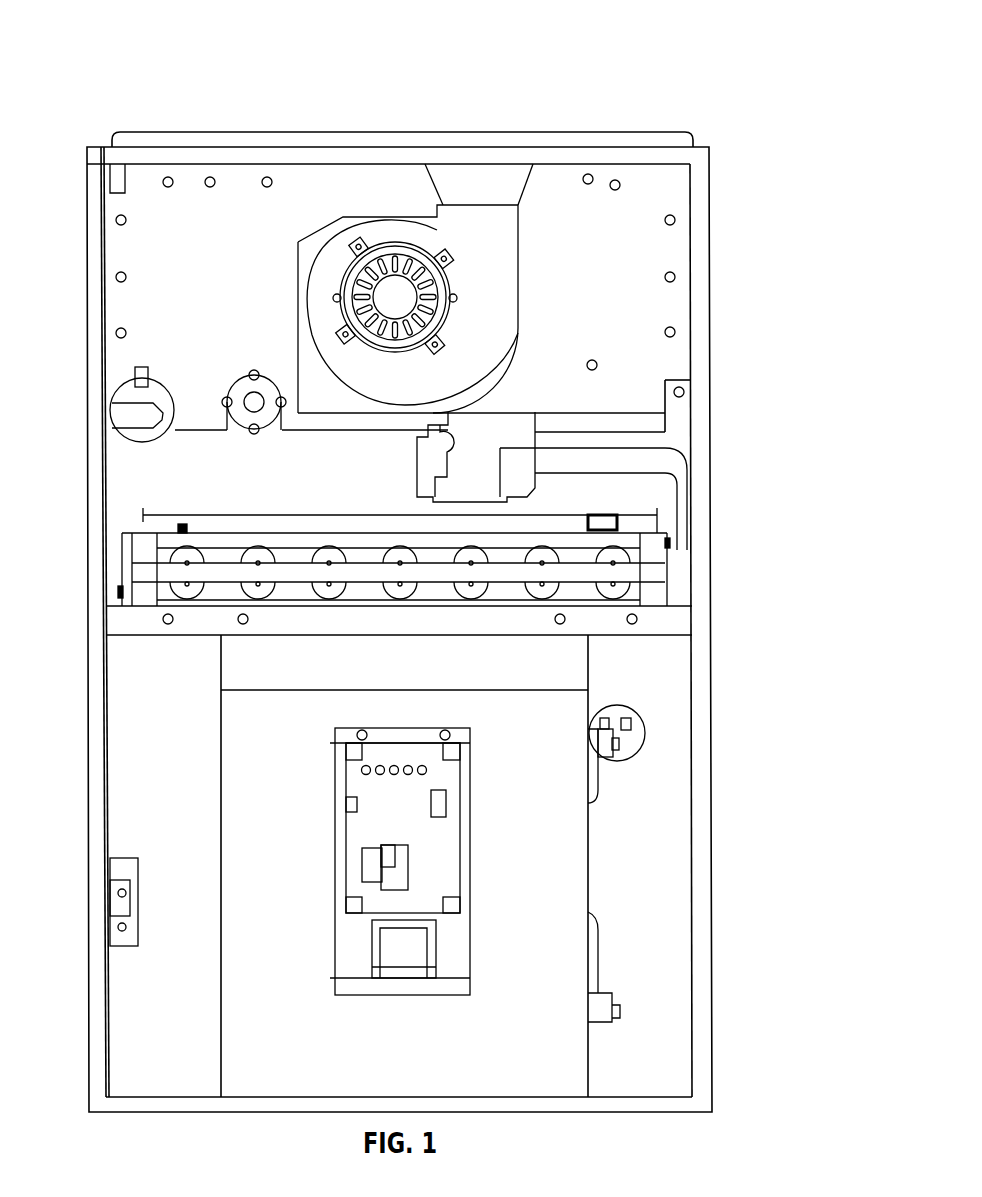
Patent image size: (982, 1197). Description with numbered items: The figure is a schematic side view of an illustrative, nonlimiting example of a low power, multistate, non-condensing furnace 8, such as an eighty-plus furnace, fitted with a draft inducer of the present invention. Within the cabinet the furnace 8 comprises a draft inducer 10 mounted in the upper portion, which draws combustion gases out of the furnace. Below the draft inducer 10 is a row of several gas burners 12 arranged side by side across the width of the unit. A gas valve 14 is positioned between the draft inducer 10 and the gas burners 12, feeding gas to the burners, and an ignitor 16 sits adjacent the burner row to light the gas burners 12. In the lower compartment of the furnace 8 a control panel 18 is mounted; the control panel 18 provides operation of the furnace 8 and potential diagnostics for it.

The furnace 8 is at (388, 102).
The draft inducer 10 is at (463, 270).
The gas burners 12 is at (338, 592).
The gas valve 14 is at (517, 412).
The ignitor 16 is at (617, 515).
The control panel 18 is at (472, 837).